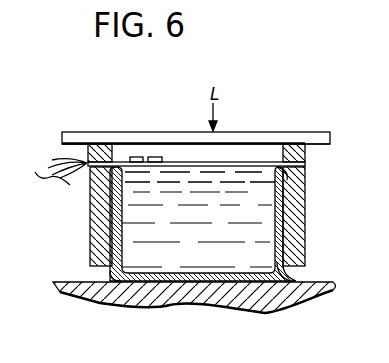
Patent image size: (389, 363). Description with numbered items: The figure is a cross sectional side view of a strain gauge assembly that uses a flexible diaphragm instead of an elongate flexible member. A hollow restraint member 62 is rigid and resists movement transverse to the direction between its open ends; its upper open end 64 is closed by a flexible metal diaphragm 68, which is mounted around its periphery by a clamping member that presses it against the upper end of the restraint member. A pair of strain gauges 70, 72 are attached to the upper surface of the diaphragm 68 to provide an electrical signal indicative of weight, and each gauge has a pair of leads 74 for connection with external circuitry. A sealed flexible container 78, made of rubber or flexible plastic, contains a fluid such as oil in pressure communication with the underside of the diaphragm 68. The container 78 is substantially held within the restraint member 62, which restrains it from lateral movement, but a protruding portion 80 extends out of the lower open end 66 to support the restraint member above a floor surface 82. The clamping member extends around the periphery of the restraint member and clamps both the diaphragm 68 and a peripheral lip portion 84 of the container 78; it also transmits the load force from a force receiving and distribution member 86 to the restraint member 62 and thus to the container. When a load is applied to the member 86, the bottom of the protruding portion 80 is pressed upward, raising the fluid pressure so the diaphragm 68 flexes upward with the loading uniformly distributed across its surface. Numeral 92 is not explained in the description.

The hollow restraint member 62 is at (298, 220).
The upper open end 64 is at (267, 166).
The lower open end 66 is at (295, 272).
The flexible diaphragm 68 is at (197, 162).
The strain gauge 70 is at (133, 157).
The strain gauge 72 is at (155, 157).
The leads 74 is at (60, 185).
The sealed flexible container 78 is at (112, 234).
The protruding portion 80 is at (103, 296).
The floor surface 82 is at (313, 283).
The peripheral lip portion 84 is at (292, 179).
The force receiving and distribution member 86 is at (78, 132).
The support 92 is at (374, 350).